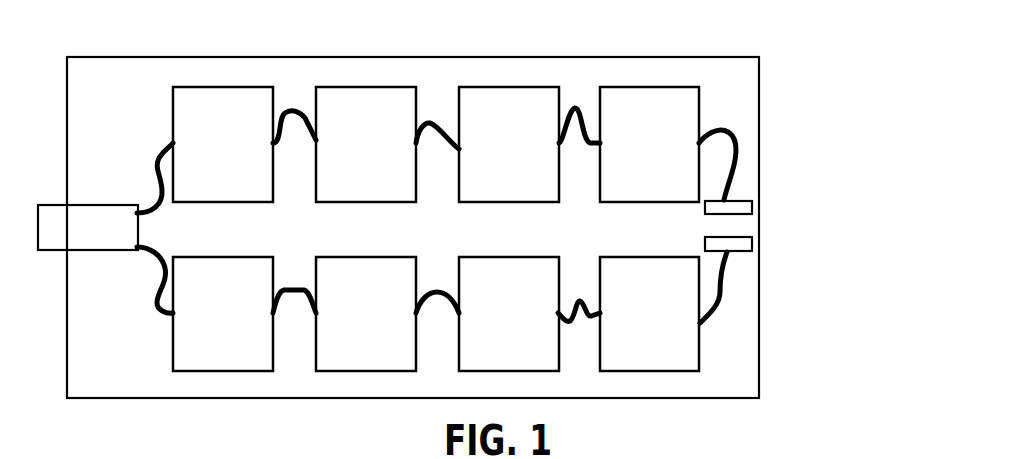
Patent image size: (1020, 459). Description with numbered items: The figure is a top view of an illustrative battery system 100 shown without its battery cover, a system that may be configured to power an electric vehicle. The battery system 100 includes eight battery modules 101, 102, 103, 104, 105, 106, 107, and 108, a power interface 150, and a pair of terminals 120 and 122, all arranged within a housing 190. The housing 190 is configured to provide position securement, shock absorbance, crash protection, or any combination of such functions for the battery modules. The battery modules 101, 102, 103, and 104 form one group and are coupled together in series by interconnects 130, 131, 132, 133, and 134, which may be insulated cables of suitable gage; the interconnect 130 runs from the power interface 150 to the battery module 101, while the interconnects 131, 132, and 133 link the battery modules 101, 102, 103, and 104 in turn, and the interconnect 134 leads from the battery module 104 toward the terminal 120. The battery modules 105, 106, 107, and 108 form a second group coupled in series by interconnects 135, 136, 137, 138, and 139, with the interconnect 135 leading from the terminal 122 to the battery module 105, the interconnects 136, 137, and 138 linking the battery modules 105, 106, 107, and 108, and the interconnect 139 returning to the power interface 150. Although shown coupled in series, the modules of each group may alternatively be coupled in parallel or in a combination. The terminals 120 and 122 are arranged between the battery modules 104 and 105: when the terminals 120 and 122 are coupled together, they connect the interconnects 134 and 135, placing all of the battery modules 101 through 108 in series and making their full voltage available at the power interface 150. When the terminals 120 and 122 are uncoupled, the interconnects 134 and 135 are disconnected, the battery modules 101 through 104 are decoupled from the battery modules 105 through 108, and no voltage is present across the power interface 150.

The battery system 100 is at (912, 174).
The battery module 101 is at (243, 156).
The battery module 102 is at (386, 156).
The battery module 103 is at (529, 156).
The battery module 104 is at (670, 156).
The battery module 105 is at (670, 326).
The battery module 106 is at (529, 326).
The battery module 107 is at (386, 326).
The battery module 108 is at (243, 326).
The terminal 120 is at (752, 207).
The terminal 122 is at (752, 245).
The interconnect 130 is at (153, 200).
The interconnect 131 is at (297, 106).
The interconnect 132 is at (433, 120).
The interconnect 133 is at (577, 106).
The interconnect 134 is at (727, 128).
The interconnect 135 is at (724, 287).
The interconnect 136 is at (568, 322).
The interconnect 137 is at (437, 296).
The interconnect 138 is at (294, 292).
The interconnect 139 is at (158, 300).
The power interface 150 is at (108, 238).
The housing 190 is at (83, 100).